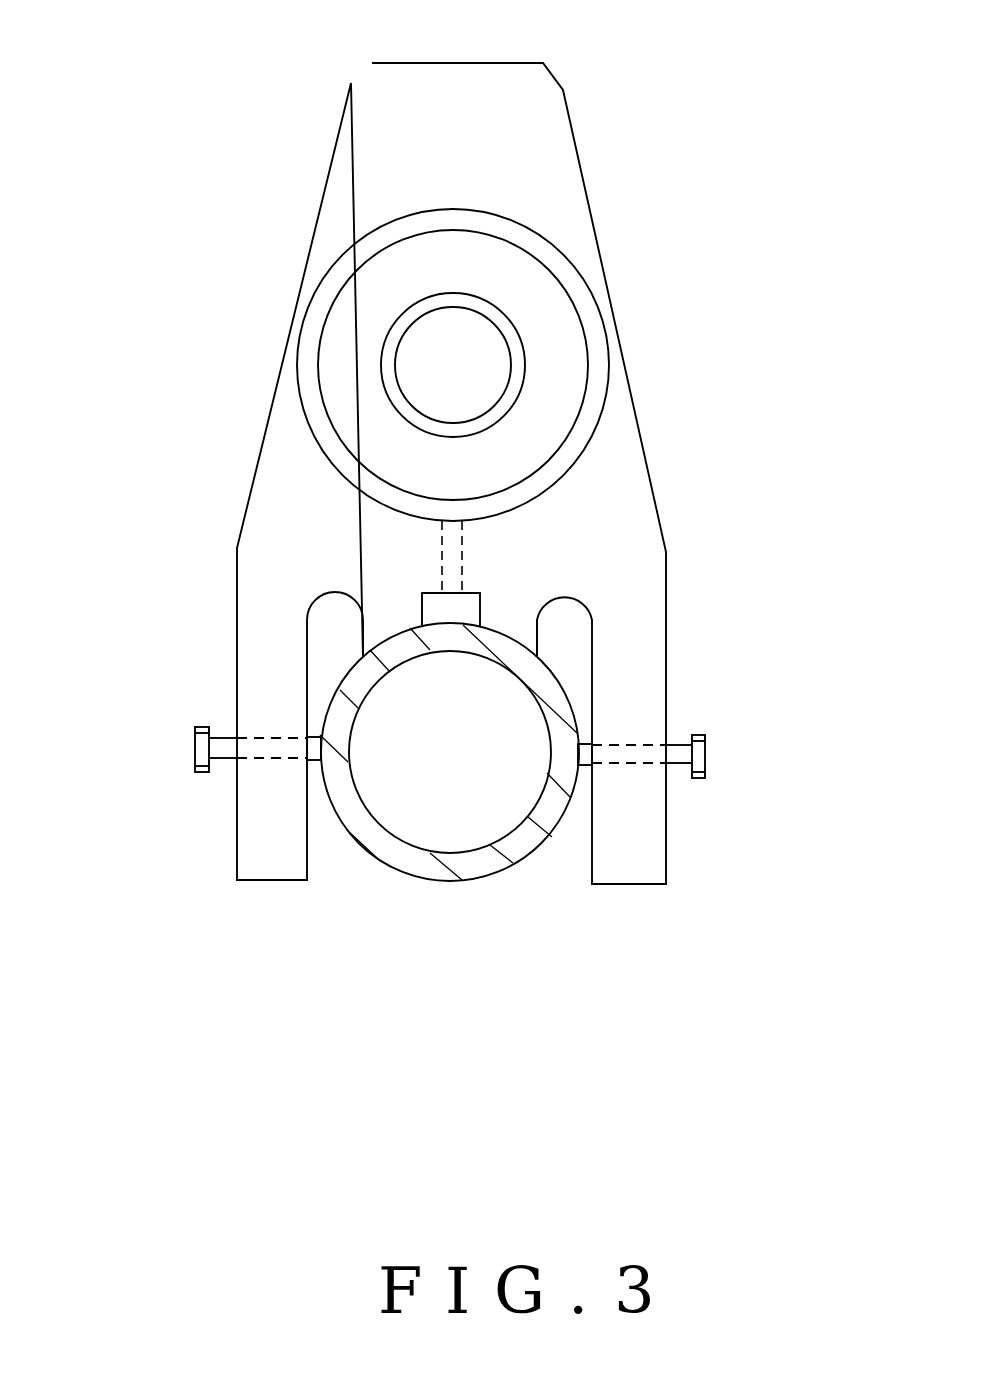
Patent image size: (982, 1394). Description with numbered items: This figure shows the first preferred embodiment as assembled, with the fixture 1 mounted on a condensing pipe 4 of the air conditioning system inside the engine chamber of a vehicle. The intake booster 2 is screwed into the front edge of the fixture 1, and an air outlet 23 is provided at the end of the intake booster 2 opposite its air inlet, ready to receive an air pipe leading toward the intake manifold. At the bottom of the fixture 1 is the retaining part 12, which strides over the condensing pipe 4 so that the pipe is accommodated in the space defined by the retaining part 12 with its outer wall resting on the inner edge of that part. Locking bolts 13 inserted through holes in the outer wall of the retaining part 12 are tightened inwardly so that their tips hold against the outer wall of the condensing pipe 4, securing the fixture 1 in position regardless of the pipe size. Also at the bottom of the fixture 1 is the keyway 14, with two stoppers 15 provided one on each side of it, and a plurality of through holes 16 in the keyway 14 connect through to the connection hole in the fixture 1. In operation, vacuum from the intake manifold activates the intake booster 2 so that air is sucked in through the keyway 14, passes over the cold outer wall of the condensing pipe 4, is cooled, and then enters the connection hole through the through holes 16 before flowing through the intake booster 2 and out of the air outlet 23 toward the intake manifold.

The fixture 1 is at (583, 247).
The intake booster 2 is at (602, 343).
The air outlet 23 is at (453, 363).
The through holes 16 is at (440, 558).
The keyway 14 is at (458, 607).
The stoppers 15 is at (525, 632).
The retaining part 12 is at (250, 690).
The locking bolts 13 is at (198, 748).
The condensing pipe 4 is at (427, 863).